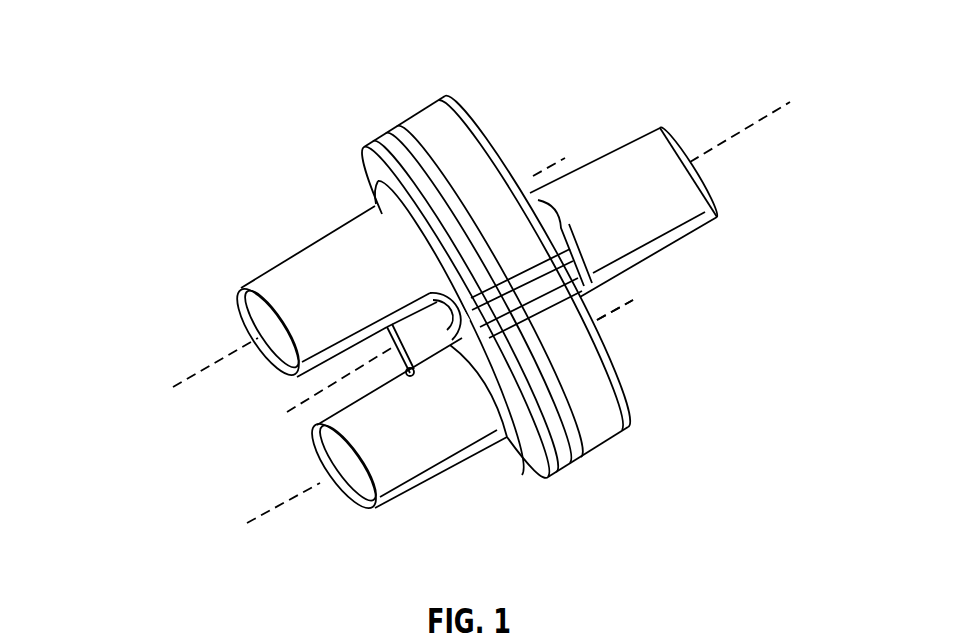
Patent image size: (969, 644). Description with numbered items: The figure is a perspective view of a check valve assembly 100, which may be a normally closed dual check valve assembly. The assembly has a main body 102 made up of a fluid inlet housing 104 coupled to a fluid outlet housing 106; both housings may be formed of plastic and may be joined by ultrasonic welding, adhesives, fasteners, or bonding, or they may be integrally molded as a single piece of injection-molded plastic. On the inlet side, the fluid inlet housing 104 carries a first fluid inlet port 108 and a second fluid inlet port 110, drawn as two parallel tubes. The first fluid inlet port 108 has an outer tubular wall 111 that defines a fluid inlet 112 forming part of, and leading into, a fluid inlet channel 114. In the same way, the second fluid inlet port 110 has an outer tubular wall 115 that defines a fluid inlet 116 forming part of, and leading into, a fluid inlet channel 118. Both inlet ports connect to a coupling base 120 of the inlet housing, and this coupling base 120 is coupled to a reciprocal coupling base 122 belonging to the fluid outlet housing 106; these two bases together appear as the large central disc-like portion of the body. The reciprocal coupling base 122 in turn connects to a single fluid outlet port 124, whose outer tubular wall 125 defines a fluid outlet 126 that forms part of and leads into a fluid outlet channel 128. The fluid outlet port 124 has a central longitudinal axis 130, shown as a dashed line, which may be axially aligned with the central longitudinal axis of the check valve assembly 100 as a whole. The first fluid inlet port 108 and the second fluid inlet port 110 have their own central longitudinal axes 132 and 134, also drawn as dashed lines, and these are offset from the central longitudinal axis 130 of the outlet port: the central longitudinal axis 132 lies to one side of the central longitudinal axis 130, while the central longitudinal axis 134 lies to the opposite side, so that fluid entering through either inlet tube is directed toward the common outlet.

The check valve assembly 100 is at (180, 90).
The main body 102 is at (412, 110).
The fluid inlet housing 104 is at (388, 527).
The fluid outlet housing 106 is at (612, 128).
The first fluid inlet port 108 is at (277, 268).
The second fluid inlet port 110 is at (440, 478).
The outer tubular wall 111 is at (325, 238).
The fluid inlet 112 is at (251, 328).
The fluid inlet channel 114 is at (266, 350).
The outer tubular wall 115 is at (411, 495).
The fluid inlet 116 is at (321, 468).
The fluid inlet channel 118 is at (334, 490).
The coupling base 120 is at (548, 480).
The reciprocal coupling base 122 is at (626, 432).
The fluid outlet port 124 is at (673, 250).
The outer tubular wall 125 is at (632, 272).
The fluid outlet 126 is at (694, 138).
The fluid outlet channel 128 is at (720, 180).
The central longitudinal axis 130 is at (768, 112).
The central longitudinal axis 132 is at (195, 370).
The central longitudinal axis 134 is at (268, 510).